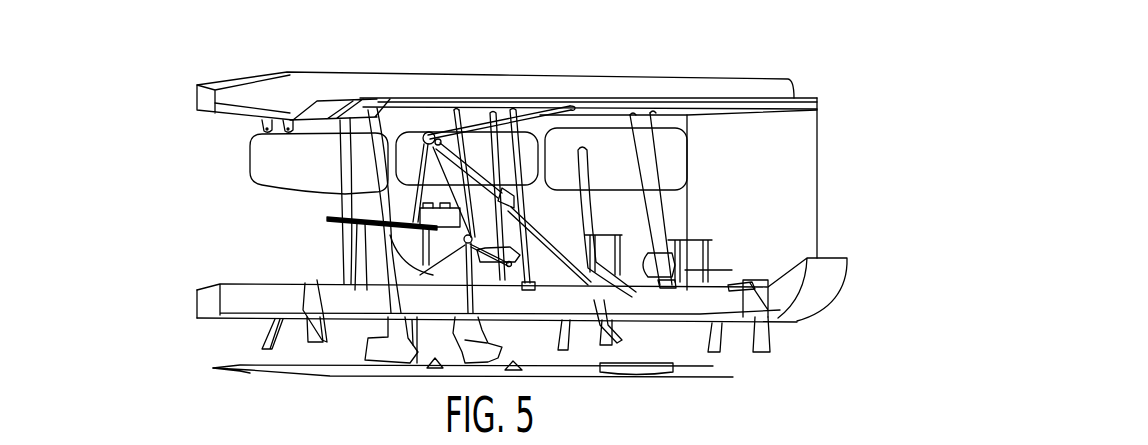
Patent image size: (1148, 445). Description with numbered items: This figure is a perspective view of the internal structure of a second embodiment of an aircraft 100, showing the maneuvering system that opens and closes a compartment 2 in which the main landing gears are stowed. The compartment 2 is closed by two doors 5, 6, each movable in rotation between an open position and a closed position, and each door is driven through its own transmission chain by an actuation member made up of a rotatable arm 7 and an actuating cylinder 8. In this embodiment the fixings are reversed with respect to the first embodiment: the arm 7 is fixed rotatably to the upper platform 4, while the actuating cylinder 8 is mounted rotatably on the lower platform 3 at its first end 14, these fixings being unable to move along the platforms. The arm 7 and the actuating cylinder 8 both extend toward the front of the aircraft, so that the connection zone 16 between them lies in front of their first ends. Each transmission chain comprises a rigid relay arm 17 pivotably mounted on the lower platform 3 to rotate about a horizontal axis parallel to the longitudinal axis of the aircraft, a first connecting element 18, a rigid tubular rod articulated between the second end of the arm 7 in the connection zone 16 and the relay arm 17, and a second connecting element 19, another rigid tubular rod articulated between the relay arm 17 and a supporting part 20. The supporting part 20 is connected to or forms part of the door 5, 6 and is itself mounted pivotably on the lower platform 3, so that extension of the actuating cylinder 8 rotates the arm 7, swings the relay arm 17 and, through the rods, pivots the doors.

The aircraft 100 is at (176, 130).
The compartment 2 is at (549, 192).
The lower platform 3 is at (570, 303).
The upper platform 4 is at (454, 78).
The door 5 is at (290, 372).
The door 6 is at (473, 393).
The arm 7 is at (473, 113).
The actuating cylinder 8 is at (567, 230).
The first end of the actuating cylinder 14 is at (625, 283).
The connection zone 16 is at (427, 132).
The relay arm 17 is at (440, 285).
The first connecting element 18 is at (462, 232).
The second connecting element 19 is at (418, 340).
The supporting part 20 is at (503, 343).